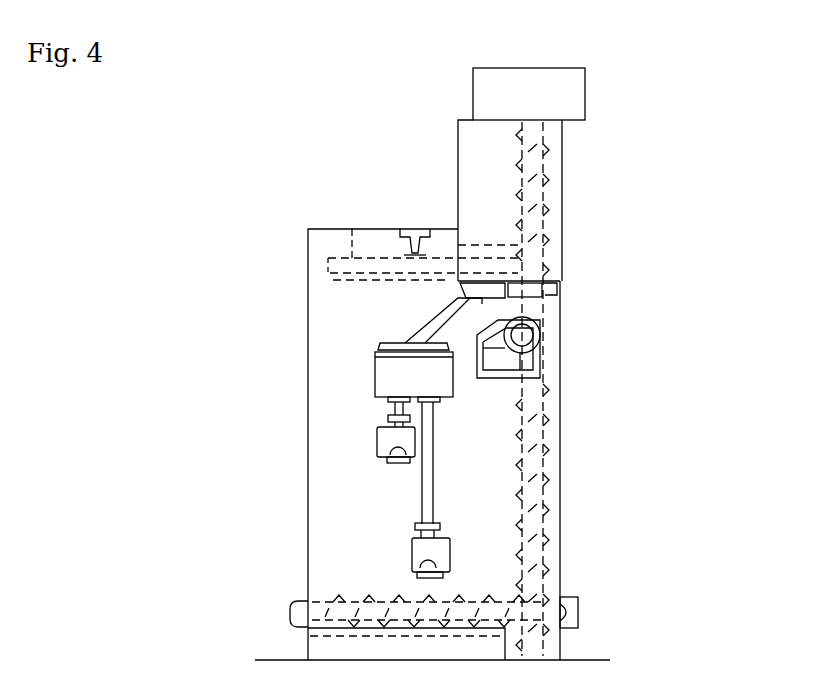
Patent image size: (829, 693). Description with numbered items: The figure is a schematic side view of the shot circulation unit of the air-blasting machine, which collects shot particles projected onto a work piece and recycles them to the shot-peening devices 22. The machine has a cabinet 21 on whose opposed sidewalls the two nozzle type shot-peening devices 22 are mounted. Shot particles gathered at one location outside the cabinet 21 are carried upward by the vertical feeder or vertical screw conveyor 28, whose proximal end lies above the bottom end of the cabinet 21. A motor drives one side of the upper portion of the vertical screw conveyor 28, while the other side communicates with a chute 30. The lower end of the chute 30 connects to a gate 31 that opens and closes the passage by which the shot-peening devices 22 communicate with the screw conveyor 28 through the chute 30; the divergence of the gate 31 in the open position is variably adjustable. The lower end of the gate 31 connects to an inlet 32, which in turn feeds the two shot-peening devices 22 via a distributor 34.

The cabinet 21 is at (313, 232).
The shot-peening device 22 is at (376, 444).
The vertical screw conveyor 28 is at (545, 482).
The chute 30 is at (470, 152).
The gate 31 is at (526, 280).
The inlet 32 is at (463, 316).
The distributor 34 is at (373, 372).